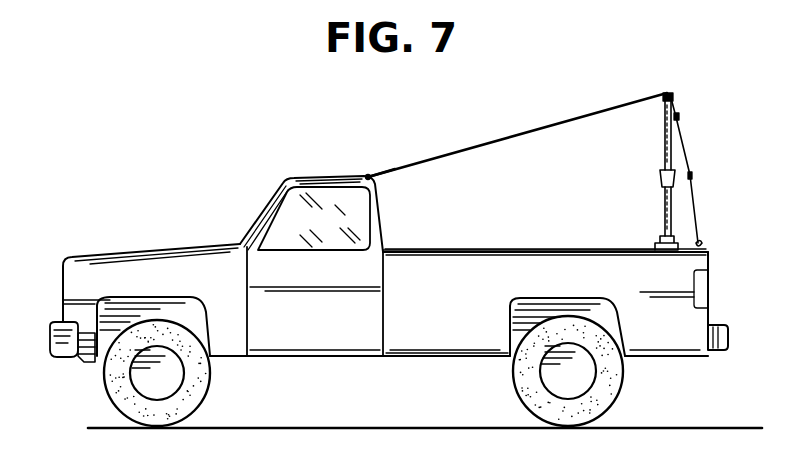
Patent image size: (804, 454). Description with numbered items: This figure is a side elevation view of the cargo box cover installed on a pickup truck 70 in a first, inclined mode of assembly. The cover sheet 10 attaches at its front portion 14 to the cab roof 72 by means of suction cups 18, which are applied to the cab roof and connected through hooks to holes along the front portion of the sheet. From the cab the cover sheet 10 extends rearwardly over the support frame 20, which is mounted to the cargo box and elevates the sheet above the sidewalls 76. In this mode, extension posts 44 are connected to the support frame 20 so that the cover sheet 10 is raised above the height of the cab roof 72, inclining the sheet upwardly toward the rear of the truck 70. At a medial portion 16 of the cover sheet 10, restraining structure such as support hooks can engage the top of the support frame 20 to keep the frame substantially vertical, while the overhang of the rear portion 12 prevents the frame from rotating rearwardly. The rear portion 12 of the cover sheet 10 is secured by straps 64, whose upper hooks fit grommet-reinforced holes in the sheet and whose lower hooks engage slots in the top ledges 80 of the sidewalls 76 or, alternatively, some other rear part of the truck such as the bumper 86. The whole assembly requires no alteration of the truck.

The pickup truck 70 is at (237, 215).
The sidewalls 76 is at (468, 314).
The top ledges 80 is at (435, 251).
The cab roof 72 is at (305, 179).
The suction cups 18 is at (366, 176).
The front portion 14 is at (379, 172).
The cover sheet 10 is at (583, 113).
The medial portion 16 is at (669, 93).
The rear portion 12 is at (677, 113).
The support frame 20 is at (661, 130).
The extension posts 44 is at (662, 205).
The straps 64 is at (693, 190).
The bumper 86 is at (728, 338).